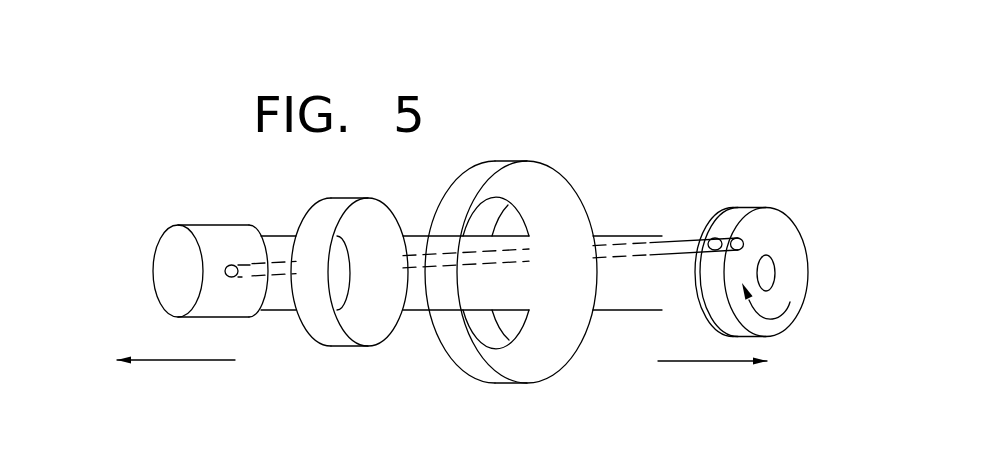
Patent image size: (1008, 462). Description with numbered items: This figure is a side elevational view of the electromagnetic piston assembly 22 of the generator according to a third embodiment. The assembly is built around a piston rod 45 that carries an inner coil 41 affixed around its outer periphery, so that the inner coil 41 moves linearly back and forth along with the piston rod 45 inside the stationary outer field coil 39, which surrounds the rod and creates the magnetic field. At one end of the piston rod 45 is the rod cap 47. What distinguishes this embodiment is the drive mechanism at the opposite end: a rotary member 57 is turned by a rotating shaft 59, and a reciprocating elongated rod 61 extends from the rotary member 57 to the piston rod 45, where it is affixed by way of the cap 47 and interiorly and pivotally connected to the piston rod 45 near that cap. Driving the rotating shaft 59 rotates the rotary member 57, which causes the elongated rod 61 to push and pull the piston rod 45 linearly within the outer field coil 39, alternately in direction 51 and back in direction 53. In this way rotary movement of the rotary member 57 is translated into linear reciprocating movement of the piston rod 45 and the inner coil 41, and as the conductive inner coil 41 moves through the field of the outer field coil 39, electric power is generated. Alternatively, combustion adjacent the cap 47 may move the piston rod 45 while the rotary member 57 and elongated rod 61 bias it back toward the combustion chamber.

The electromagnetic piston assembly 22 is at (192, 185).
The rod cap 47 is at (178, 278).
The piston rod 45 is at (417, 295).
The inner coil 41 is at (370, 332).
The outer field coil 39 is at (545, 173).
The reciprocating elongated rod 61 is at (632, 248).
The rotary member 57 is at (772, 227).
The rotating shaft 59 is at (768, 272).
The direction toward combustion chamber 53 is at (196, 361).
The direction away from combustion chamber 51 is at (690, 363).